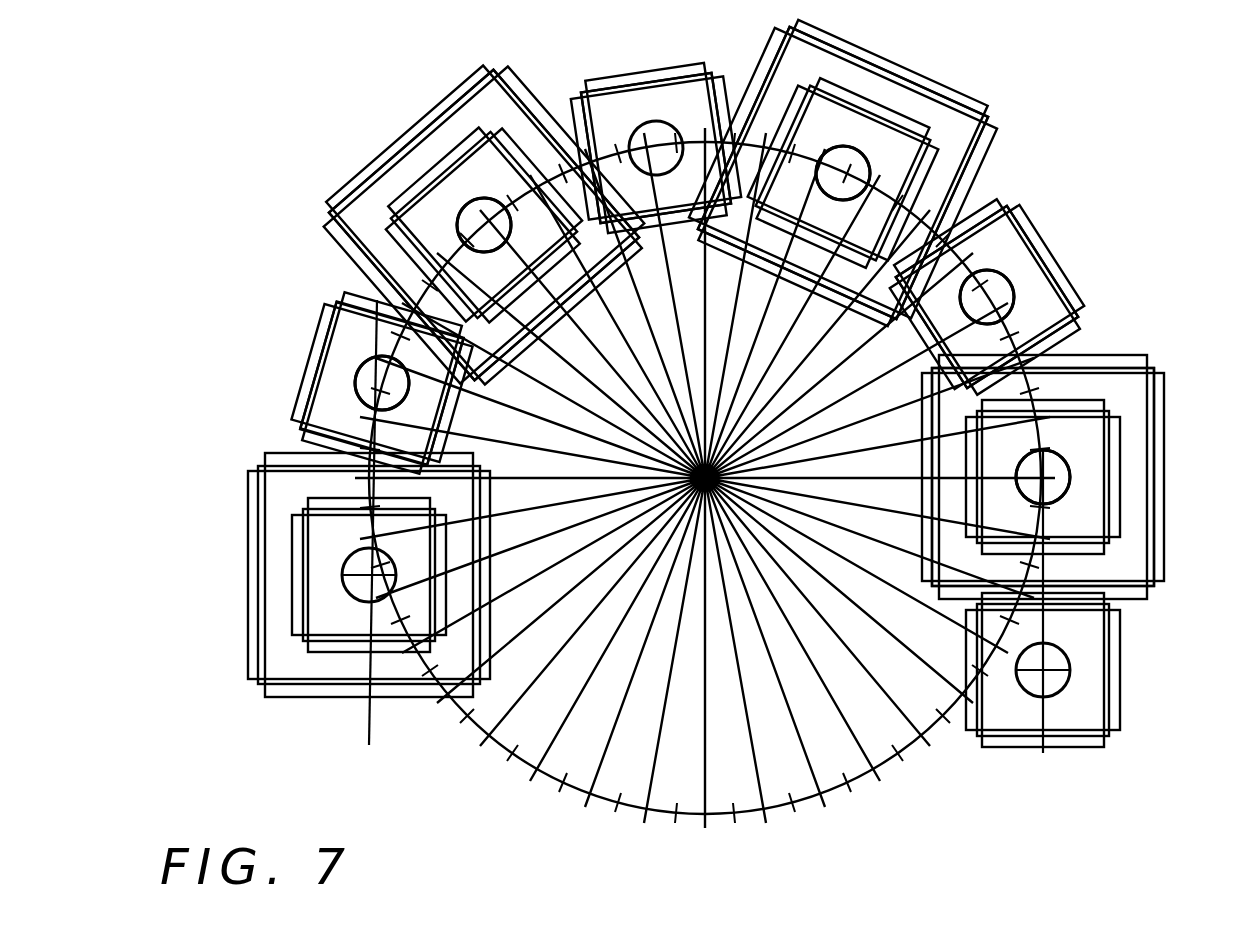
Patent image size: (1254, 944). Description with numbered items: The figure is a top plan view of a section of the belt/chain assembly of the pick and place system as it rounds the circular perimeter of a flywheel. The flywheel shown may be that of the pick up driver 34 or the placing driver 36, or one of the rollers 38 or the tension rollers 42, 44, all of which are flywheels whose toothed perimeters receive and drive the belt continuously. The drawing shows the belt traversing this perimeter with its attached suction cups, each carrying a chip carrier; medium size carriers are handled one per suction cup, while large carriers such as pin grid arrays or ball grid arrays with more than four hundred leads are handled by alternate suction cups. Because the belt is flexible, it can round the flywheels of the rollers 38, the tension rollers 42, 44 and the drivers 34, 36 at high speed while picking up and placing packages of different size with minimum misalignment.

The pick up driver 34 is at (730, 490).
The placing driver 36 is at (730, 490).
The rollers 38 is at (730, 490).
The tension roller 42 is at (730, 490).
The tension roller 44 is at (803, 795).